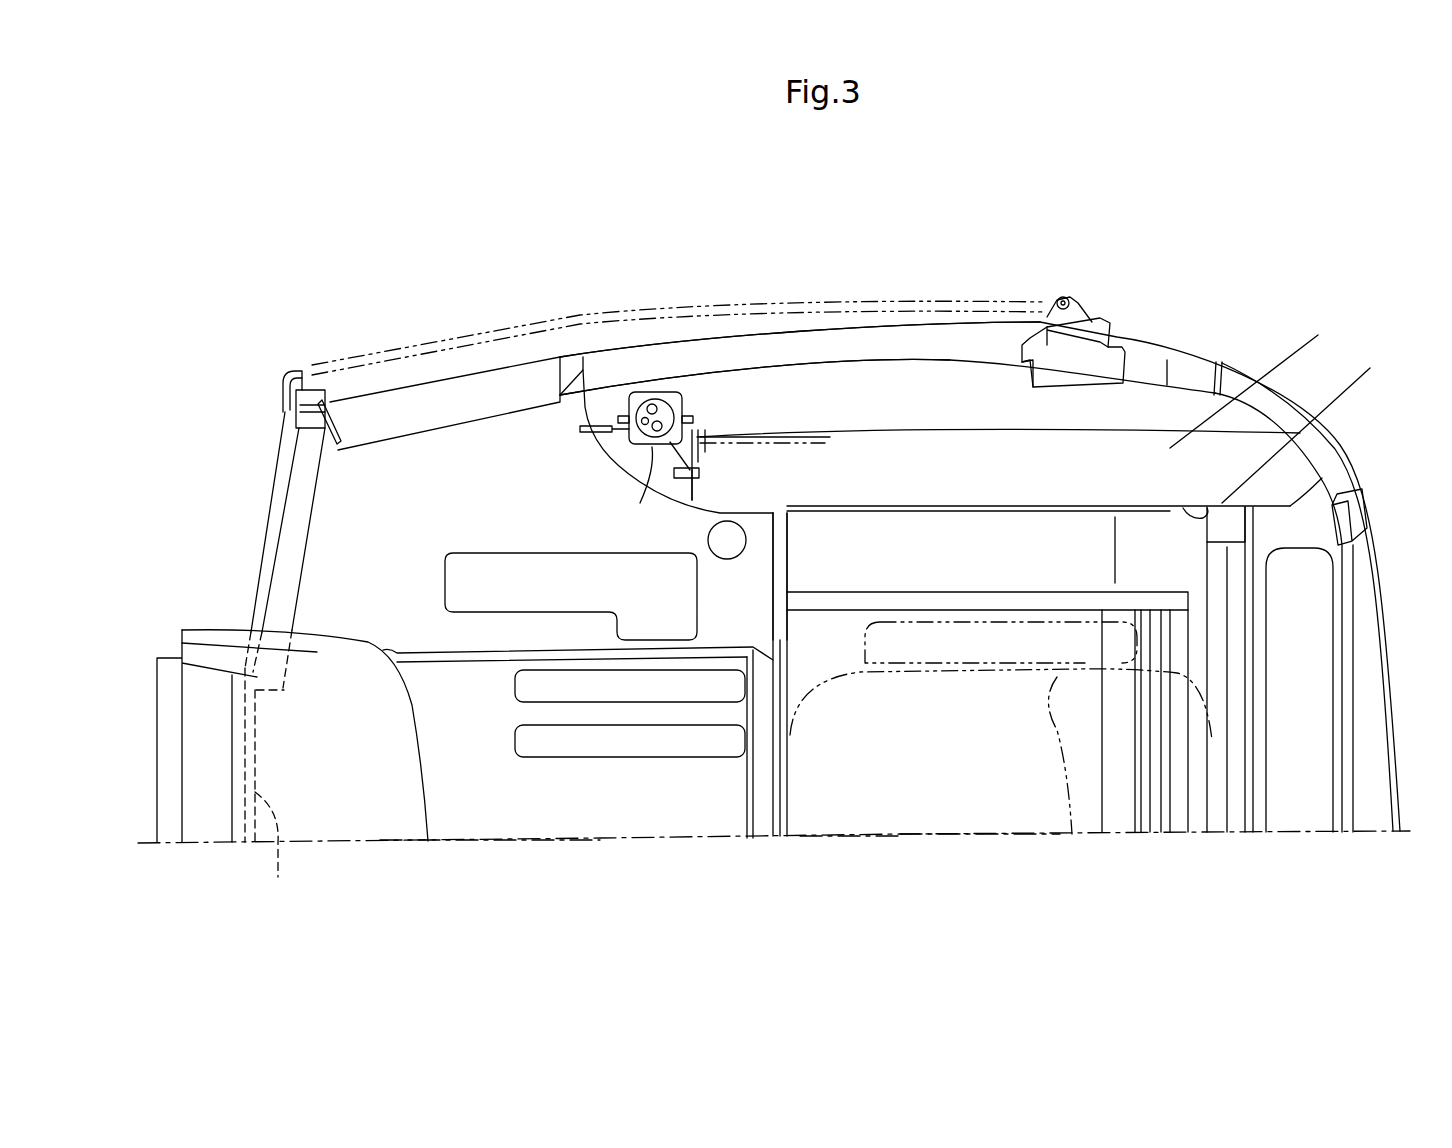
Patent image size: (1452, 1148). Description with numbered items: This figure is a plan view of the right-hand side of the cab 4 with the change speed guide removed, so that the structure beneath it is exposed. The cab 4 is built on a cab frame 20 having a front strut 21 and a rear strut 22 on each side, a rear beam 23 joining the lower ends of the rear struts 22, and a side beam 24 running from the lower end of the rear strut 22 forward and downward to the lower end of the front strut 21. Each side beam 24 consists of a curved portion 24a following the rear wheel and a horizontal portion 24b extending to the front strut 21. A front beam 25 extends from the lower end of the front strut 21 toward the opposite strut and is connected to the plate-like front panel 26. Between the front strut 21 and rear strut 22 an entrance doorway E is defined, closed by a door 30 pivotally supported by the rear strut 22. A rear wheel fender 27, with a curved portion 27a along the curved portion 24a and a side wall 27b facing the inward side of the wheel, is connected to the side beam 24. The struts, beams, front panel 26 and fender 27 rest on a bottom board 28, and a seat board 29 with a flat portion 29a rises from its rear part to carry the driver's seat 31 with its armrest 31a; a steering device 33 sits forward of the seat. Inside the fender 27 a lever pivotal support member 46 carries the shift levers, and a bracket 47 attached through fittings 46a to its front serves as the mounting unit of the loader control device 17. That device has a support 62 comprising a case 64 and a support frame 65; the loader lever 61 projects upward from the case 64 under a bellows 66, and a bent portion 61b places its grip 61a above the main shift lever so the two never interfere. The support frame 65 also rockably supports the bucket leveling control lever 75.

The cab 4 is at (1325, 851).
The loader control device 17 is at (852, 604).
The cab frame 20 is at (1200, 268).
The front strut 21 is at (298, 384).
The rear strut 22 is at (1092, 323).
The rear beam 23 is at (1350, 472).
The side beam 24 is at (685, 326).
The curved portion 24a is at (800, 321).
The horizontal portion 24b is at (513, 370).
The front beam 25 is at (268, 491).
The front panel 26 is at (271, 788).
The rear wheel fender 27 is at (1300, 390).
The curved portion 27a is at (1267, 372).
The side wall 27b is at (1320, 422).
The bottom board 28 is at (493, 822).
The seat board 29 is at (967, 795).
The flat portion 29a is at (863, 788).
The door 30 is at (936, 303).
The driver's seat 31 is at (999, 718).
The armrest 31a is at (963, 627).
The steering device 33 is at (420, 733).
The lever pivotal support member 46 is at (800, 440).
The fittings 46a is at (777, 437).
The bracket 47 is at (707, 437).
The loader lever 61 is at (778, 552).
The grip 61a is at (727, 560).
The bent portion 61b is at (706, 500).
The support 62 is at (723, 339).
The case 64 is at (678, 393).
The support frame 65 is at (650, 393).
The bellows 66 is at (628, 493).
The bucket leveling control lever 75 is at (619, 470).
The entrance doorway E is at (401, 331).